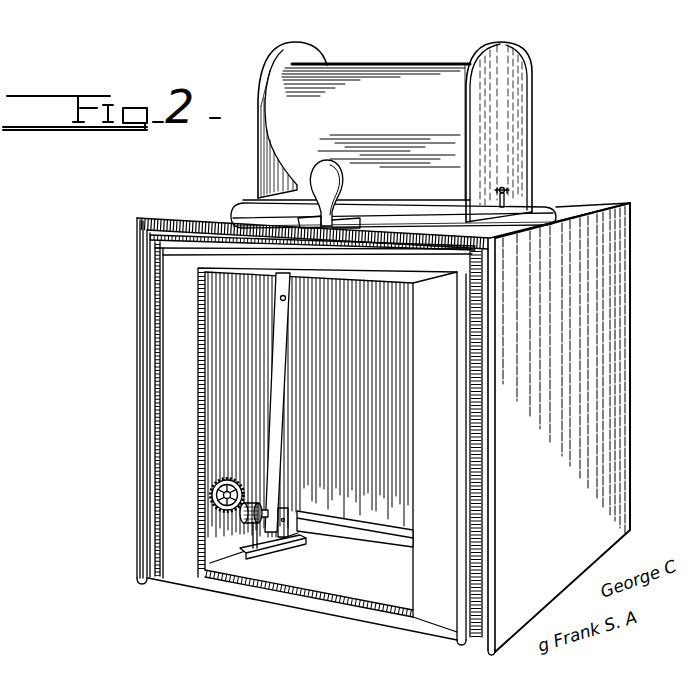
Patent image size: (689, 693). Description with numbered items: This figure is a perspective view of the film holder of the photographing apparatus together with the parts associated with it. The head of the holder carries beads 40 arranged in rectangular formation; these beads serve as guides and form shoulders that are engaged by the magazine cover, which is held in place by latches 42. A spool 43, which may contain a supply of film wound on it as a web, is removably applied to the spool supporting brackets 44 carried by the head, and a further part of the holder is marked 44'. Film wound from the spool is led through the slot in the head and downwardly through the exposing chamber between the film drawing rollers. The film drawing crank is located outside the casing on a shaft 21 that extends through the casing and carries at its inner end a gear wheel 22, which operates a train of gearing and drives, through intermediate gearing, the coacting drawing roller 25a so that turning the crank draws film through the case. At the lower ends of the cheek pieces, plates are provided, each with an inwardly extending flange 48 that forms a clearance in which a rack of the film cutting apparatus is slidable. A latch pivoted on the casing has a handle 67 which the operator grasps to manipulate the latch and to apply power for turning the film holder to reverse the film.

The beads 40 is at (548, 202).
The latches 42 is at (507, 193).
The spool 43 is at (300, 46).
The spool supporting brackets 44 is at (513, 117).
The drum 44' is at (432, 132).
The handle 67 is at (312, 182).
The shaft 21 is at (230, 481).
The gear wheel 22 is at (250, 524).
The coacting drawing roller 25a is at (310, 534).
The flange 48 is at (256, 549).